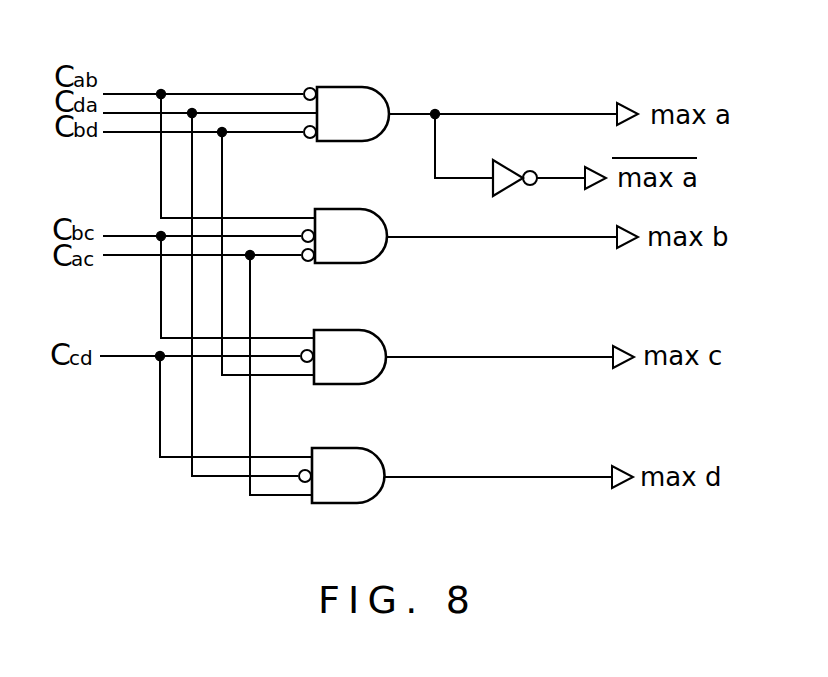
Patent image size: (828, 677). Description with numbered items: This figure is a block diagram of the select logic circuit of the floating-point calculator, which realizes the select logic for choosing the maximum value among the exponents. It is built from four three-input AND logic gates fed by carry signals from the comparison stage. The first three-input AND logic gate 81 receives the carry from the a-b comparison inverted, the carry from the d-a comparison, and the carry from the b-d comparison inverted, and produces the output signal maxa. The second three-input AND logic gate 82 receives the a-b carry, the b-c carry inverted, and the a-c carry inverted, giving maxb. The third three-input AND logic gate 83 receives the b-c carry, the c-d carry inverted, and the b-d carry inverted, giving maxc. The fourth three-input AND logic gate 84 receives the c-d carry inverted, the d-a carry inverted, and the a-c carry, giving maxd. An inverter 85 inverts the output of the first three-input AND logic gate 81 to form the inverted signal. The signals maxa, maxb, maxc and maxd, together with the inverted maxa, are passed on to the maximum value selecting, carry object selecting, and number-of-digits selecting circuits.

The first 3-input AND logic gate 81 is at (376, 87).
The second 3-input AND logic gate 82 is at (383, 257).
The third 3-input AND logic gate 83 is at (383, 379).
The fourth 3-input AND logic gate 84 is at (382, 497).
The inverter 85 is at (493, 187).